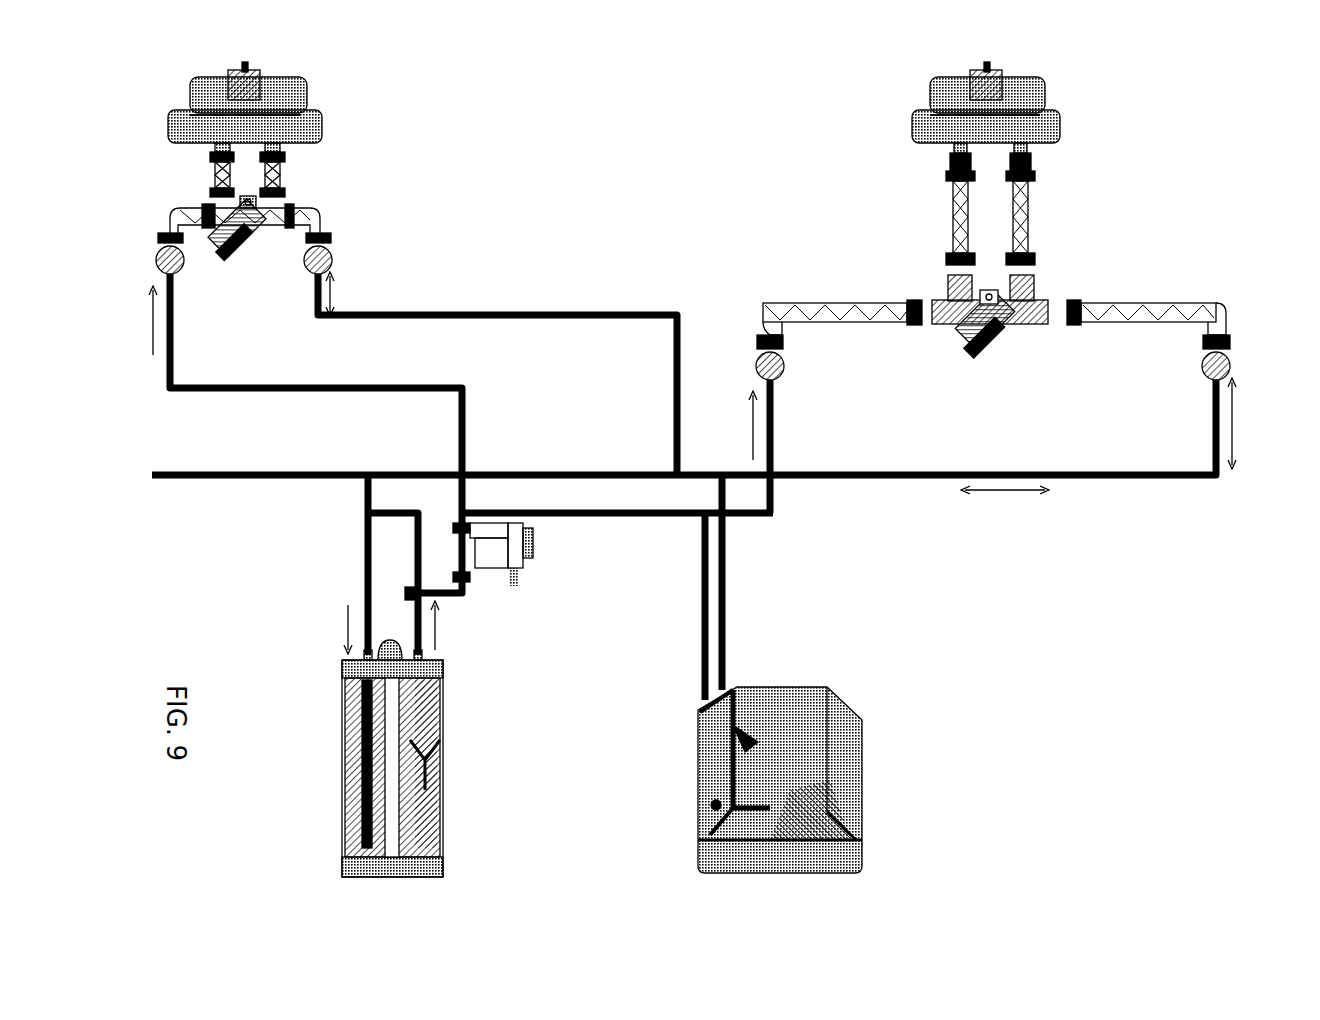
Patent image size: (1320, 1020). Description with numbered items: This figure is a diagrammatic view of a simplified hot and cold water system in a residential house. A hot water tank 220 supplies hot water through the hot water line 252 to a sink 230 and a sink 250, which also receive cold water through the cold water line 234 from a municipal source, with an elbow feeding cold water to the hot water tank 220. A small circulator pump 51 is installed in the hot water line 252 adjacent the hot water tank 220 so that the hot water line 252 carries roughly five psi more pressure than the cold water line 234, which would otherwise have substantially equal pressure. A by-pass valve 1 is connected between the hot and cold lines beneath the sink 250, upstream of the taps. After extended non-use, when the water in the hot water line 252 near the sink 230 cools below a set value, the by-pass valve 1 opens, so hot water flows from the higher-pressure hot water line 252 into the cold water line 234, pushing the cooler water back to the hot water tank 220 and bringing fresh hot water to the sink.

The by-pass valve 1 is at (1005, 350).
The circulator pump 51 is at (518, 568).
The hot water tank 220 is at (443, 753).
The sink 230 is at (1035, 210).
The cold water line 234 is at (1167, 480).
The sink 250 is at (1062, 122).
The hot water line 252 is at (575, 514).